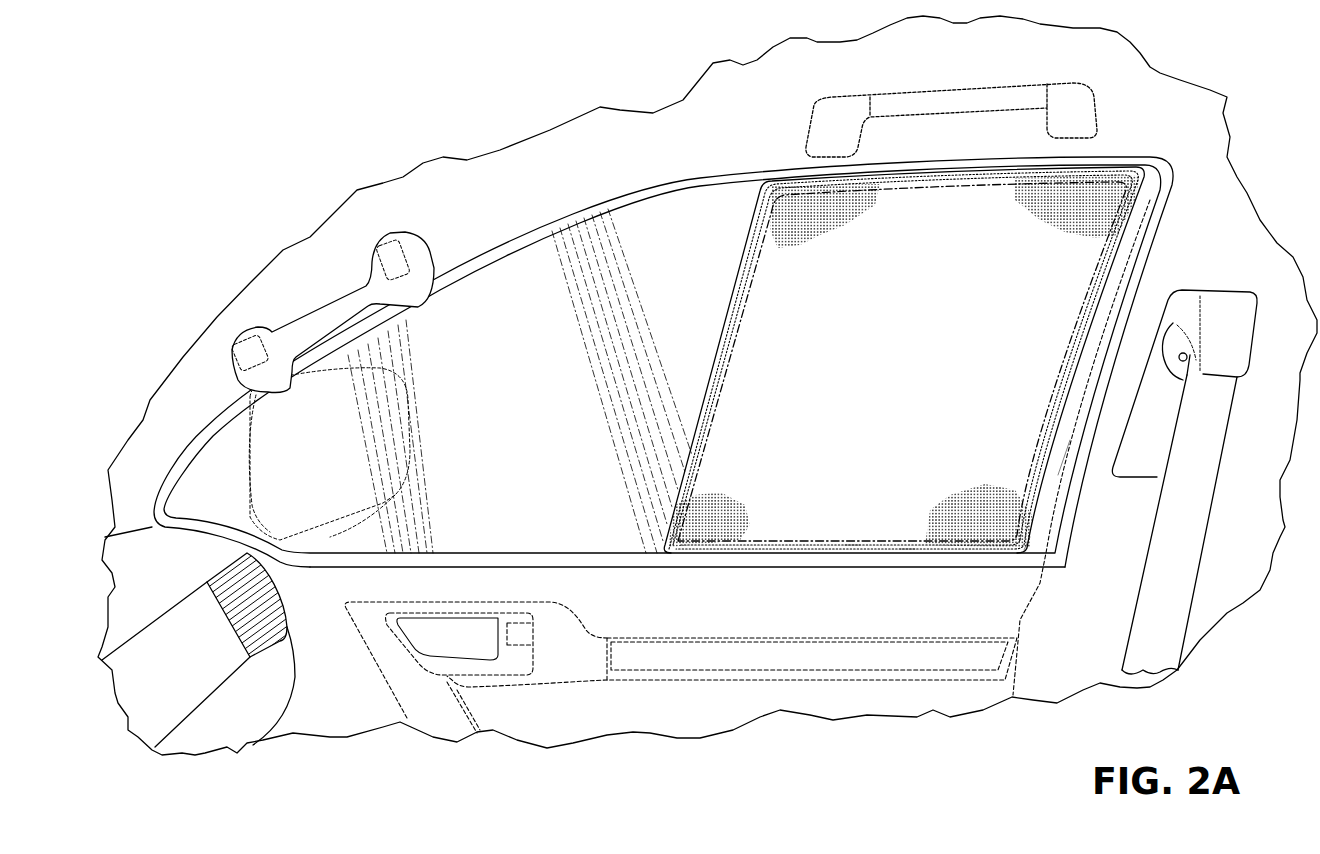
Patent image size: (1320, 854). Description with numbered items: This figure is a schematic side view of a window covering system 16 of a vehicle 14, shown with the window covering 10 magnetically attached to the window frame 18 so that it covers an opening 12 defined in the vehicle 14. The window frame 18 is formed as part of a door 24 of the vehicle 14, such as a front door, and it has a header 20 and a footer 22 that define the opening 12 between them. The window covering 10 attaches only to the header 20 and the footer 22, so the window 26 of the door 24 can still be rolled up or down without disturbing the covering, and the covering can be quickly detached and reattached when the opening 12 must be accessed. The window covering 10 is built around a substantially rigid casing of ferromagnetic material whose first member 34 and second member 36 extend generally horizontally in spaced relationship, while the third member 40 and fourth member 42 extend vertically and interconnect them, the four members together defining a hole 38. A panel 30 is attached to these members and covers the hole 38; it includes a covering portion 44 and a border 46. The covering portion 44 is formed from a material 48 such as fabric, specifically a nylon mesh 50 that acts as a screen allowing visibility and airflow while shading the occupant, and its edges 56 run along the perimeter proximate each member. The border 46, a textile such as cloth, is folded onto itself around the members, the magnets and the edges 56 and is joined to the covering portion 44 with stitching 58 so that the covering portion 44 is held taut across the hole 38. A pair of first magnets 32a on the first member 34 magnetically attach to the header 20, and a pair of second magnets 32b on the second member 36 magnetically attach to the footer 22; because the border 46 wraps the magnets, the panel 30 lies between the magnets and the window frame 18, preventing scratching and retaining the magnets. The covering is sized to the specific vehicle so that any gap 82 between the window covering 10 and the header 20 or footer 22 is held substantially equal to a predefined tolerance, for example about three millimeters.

The window covering 10 is at (745, 213).
The opening 12 is at (677, 240).
The vehicle 14 is at (500, 187).
The window covering system 16 is at (768, 158).
The window frame 18 is at (557, 222).
The header 20 is at (980, 163).
The footer 22 is at (563, 565).
The door 24 is at (338, 710).
The window 26 is at (500, 405).
The panel 30 is at (889, 356).
The first magnets 32a is at (843, 176).
The second magnets 32b is at (728, 557).
The first member 34 is at (933, 173).
The second member 36 is at (847, 550).
The hole 38 is at (763, 360).
The third member 40 is at (720, 373).
The fourth member 42 is at (1133, 253).
The covering portion 44 is at (1113, 197).
The border 46 is at (1055, 472).
The material 48 is at (1030, 537).
The nylon mesh 50 is at (1013, 510).
The edges 56 is at (907, 560).
The stitching 58 is at (853, 553).
The gap 82 is at (893, 137).